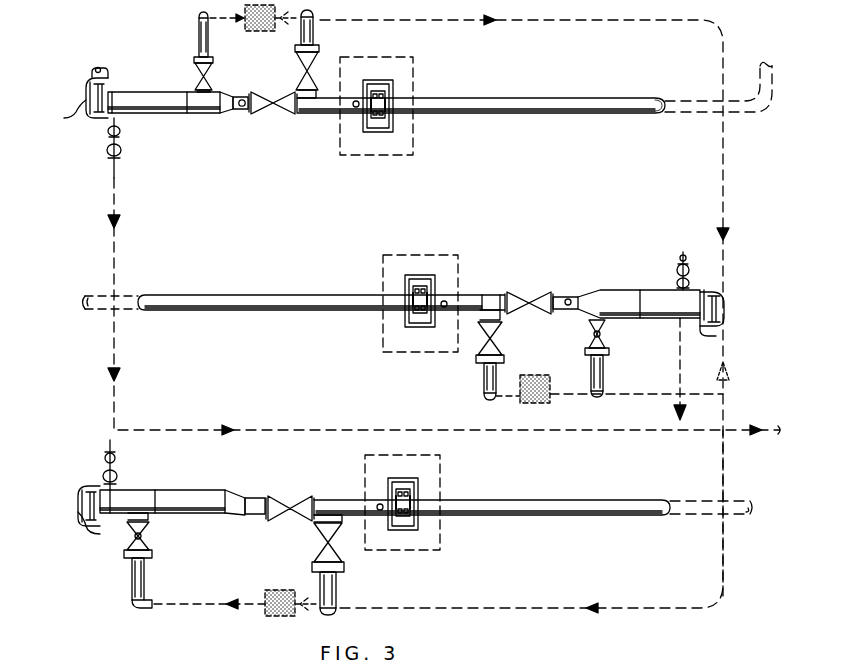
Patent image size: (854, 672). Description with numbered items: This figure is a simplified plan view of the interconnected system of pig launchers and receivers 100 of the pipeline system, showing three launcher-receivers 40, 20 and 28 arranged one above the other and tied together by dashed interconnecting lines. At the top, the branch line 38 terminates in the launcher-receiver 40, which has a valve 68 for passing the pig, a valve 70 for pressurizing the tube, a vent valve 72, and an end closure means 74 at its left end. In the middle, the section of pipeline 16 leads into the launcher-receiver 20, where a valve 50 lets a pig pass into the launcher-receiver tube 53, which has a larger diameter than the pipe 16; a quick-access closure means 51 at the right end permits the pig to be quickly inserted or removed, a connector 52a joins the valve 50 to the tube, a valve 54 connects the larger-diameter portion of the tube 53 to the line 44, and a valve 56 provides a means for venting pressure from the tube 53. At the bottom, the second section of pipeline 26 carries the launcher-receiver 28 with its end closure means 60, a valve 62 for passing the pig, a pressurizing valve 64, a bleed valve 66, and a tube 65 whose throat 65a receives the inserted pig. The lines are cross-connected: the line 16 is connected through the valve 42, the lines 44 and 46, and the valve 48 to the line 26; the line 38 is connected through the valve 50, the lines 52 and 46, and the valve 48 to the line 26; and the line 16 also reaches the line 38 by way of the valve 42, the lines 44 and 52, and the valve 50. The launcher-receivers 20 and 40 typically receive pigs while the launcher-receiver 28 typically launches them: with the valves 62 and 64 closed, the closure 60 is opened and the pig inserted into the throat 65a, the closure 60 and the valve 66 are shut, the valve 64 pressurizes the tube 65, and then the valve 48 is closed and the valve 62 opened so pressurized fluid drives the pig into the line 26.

The system 100 is at (143, 4).
The section of pipeline 16 is at (238, 314).
The launcher-receiver 20 is at (628, 285).
The second section of pipeline 26 is at (548, 518).
The launcher-receiver 28 is at (211, 476).
The branch line 38 is at (533, 116).
The launcher-receiver 40 is at (167, 127).
The valve 42 is at (498, 340).
The line 44 is at (553, 398).
The line 46 is at (498, 612).
The valve 48 is at (314, 538).
The valve 50 is at (295, 66).
The quick-access closure means 51 is at (724, 292).
The line 52 is at (524, 26).
The connector 52a is at (580, 294).
The launcher-receiver tube 53 is at (632, 318).
The valve 54 is at (590, 342).
The valve 56 is at (689, 264).
The end closure means 60 is at (82, 484).
The valve 62 is at (290, 486).
The pressurizing valve 64 is at (144, 532).
The tube 65 is at (232, 516).
The throat 65a is at (262, 516).
The bleed valve 66 is at (115, 462).
The valve 68 is at (264, 116).
The valve 70 is at (194, 80).
The vent valve 72 is at (121, 148).
The end closure means 74 is at (78, 118).